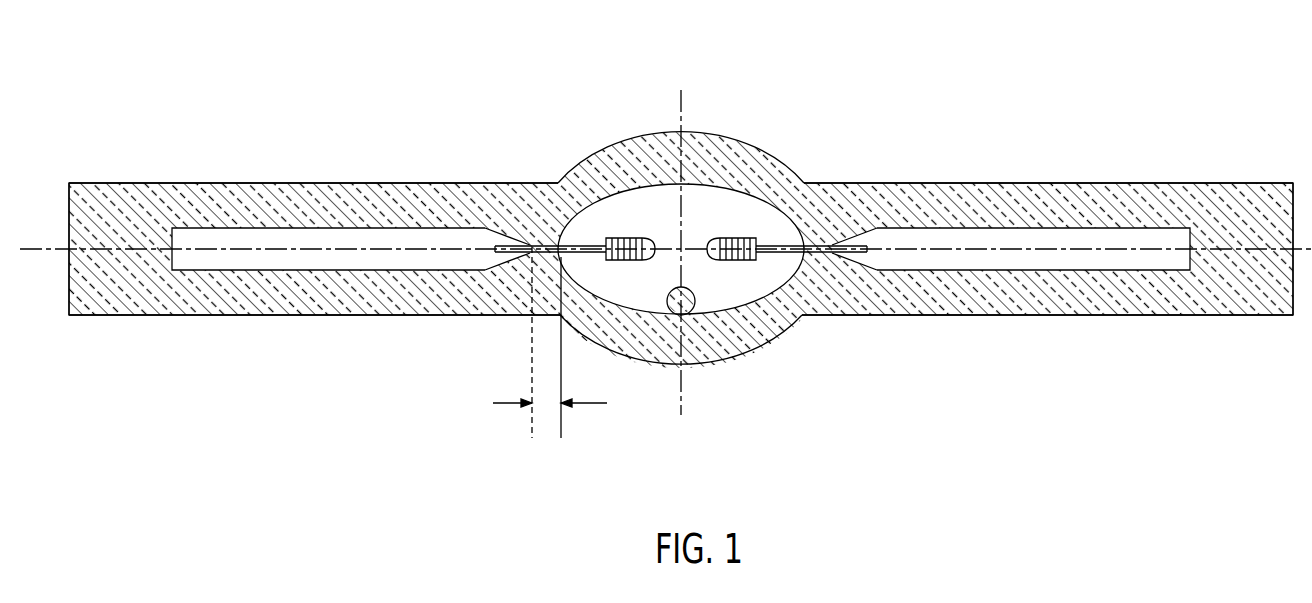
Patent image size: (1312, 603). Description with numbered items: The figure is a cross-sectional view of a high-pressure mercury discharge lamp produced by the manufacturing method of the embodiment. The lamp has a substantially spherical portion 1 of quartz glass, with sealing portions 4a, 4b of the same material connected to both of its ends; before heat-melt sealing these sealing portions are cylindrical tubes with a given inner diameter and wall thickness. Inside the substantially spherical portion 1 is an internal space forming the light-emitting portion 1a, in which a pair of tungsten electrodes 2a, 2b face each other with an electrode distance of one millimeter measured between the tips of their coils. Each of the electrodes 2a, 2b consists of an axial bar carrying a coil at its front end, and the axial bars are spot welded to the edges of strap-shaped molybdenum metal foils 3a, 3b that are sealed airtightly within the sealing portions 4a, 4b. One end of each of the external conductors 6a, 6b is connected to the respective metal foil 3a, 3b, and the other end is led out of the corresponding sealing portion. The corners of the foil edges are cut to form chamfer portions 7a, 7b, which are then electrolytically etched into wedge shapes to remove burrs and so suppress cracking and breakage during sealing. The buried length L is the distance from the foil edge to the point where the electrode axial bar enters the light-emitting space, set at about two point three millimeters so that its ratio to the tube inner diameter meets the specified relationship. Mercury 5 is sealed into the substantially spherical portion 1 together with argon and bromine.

The substantially spherical portion 1 is at (733, 132).
The light-emitting portion 1a is at (652, 212).
The electrode 2a is at (580, 238).
The electrode 2b is at (806, 240).
The metal foil 3a is at (390, 233).
The metal foil 3b is at (970, 237).
The sealing portion 4a is at (290, 186).
The sealing portion 4b is at (1095, 183).
The mercury 5 is at (743, 343).
The external conductor 6a is at (133, 243).
The external conductor 6b is at (1222, 250).
The chamfer portion 7a is at (528, 243).
The chamfer portion 7b is at (835, 244).
The buried length L is at (550, 360).